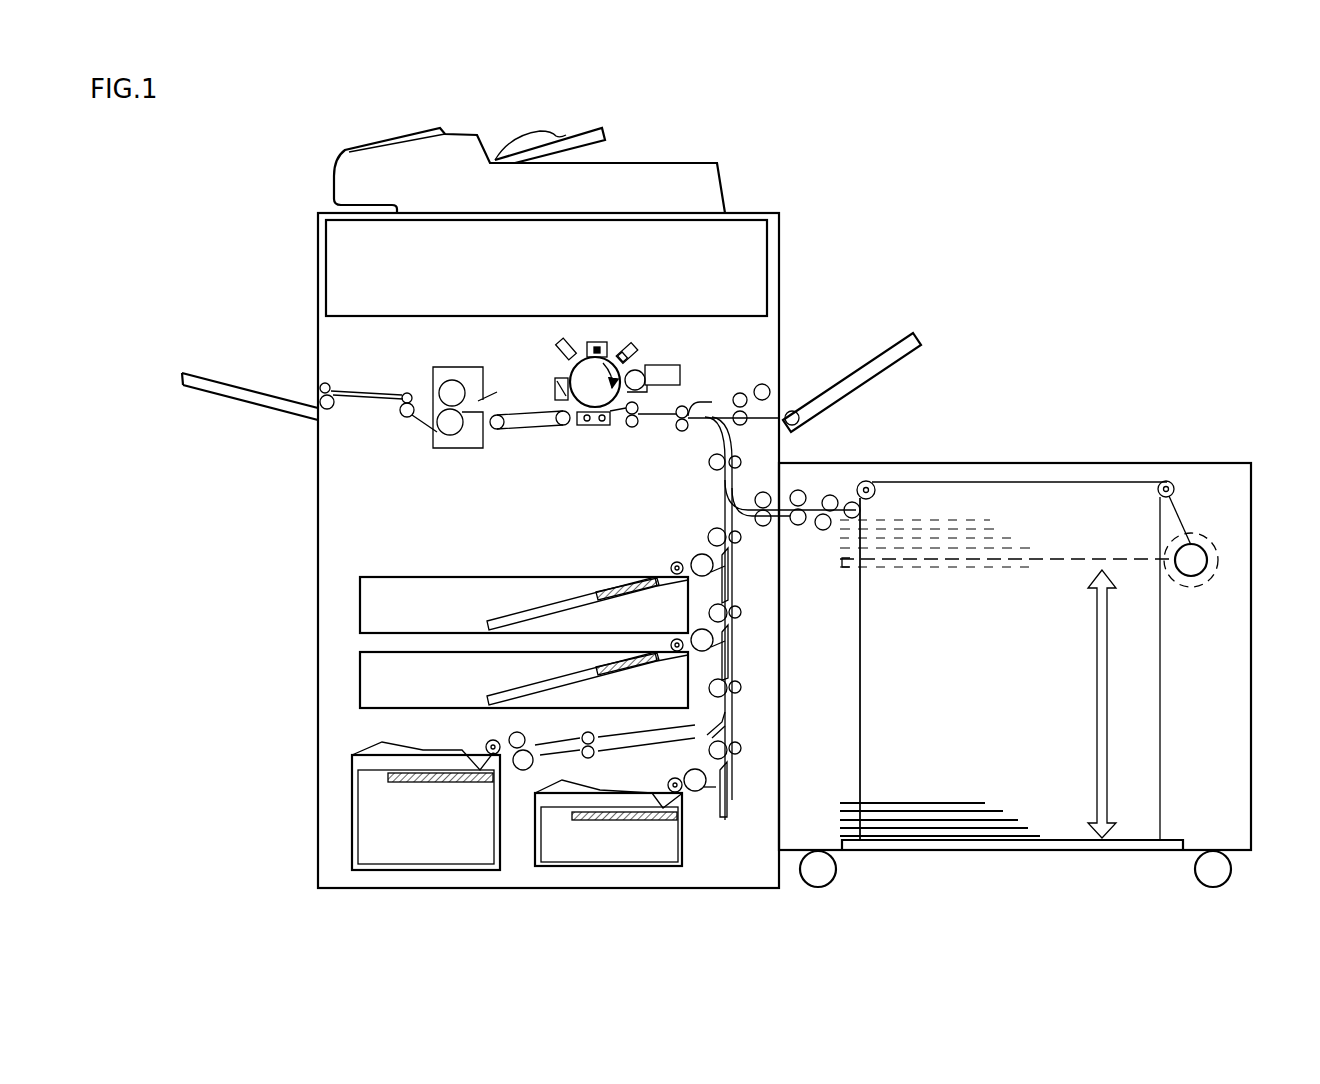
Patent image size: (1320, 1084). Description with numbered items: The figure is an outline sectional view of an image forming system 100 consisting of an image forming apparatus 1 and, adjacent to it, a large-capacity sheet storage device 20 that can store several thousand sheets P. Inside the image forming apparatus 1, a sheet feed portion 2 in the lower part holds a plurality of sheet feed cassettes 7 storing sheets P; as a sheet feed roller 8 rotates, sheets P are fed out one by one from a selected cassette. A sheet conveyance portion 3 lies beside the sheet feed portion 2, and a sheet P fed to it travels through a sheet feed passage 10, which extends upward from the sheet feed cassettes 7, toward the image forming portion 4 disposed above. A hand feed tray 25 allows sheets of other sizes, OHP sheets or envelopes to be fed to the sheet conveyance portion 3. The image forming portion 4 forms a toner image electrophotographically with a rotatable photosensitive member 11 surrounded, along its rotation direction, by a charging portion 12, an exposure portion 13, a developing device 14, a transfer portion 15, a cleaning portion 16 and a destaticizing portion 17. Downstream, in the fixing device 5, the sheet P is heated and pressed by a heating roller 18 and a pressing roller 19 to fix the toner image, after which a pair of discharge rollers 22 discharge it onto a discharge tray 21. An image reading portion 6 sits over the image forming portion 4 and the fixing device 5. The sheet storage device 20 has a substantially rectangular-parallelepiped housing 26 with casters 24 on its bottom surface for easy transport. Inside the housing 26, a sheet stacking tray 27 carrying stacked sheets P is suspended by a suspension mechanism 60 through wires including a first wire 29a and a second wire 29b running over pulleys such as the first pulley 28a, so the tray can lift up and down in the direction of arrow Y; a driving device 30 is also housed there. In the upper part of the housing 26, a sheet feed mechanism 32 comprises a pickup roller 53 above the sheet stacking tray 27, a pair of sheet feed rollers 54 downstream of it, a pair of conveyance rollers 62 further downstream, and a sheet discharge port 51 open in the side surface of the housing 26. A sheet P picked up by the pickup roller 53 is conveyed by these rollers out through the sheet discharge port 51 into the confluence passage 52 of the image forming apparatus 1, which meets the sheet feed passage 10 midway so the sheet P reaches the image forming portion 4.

The image forming system 100 is at (988, 266).
The image forming apparatus 1 is at (786, 211).
The sheet feed portion 2 is at (352, 729).
The sheet conveyance portion 3 is at (734, 585).
The image forming portion 4 is at (506, 346).
The fixing device 5 is at (441, 459).
The image reading portion 6 is at (762, 274).
The sheet feed cassette 7 is at (370, 607).
The sheet feed roller 8 is at (676, 562).
The sheet feed passage 10 is at (723, 490).
The photosensitive member 11 is at (572, 370).
The charging portion 12 is at (596, 342).
The exposure portion 13 is at (630, 338).
The developing device 14 is at (682, 376).
The transfer portion 15 is at (594, 427).
The cleaning portion 16 is at (553, 389).
The destaticizing portion 17 is at (558, 345).
The heating roller 18 is at (443, 386).
The supply roller 19 is at (458, 437).
The sheet storage device 20 is at (1256, 458).
The discharge tray 21 is at (243, 405).
The pair of discharge rollers 22 is at (308, 381).
The caster 24 is at (818, 876).
The hand feed tray 25 is at (880, 347).
The housing 26 is at (1227, 471).
The sheet stacking tray 27 is at (1166, 838).
The first pulley 28a is at (1208, 566).
The first wire 29a is at (1162, 706).
The second wire 29b is at (862, 706).
The driving device 30 is at (1218, 533).
The sheet feed mechanism 32 is at (836, 490).
The sheet discharge port 51 is at (798, 527).
The confluence passage 52 is at (751, 499).
The pickup roller 53 is at (857, 510).
The pair of sheet feed rollers 54 is at (824, 532).
The suspension mechanism 60 is at (1163, 478).
The pair of conveyance rollers 62 is at (806, 491).
The sheet P is at (545, 602).
The up-down direction Y is at (1107, 704).